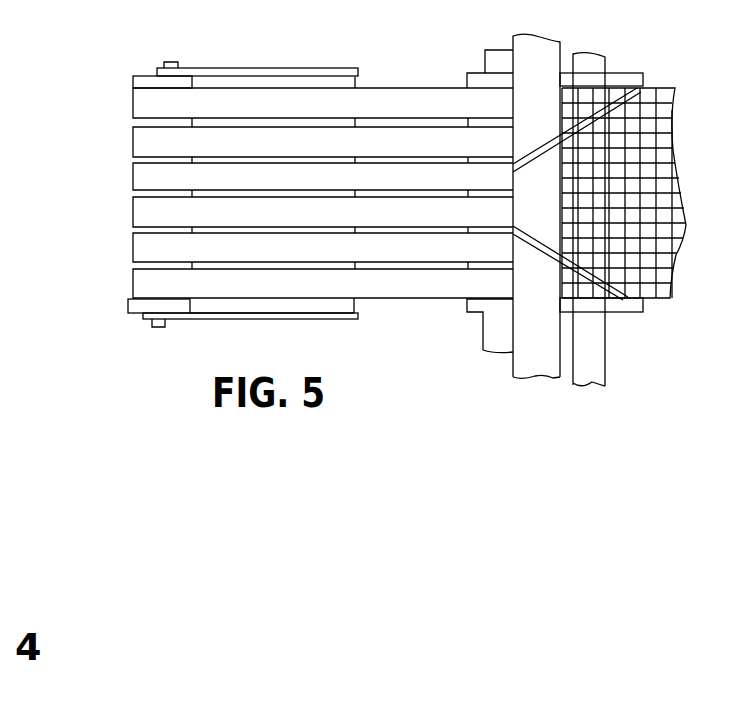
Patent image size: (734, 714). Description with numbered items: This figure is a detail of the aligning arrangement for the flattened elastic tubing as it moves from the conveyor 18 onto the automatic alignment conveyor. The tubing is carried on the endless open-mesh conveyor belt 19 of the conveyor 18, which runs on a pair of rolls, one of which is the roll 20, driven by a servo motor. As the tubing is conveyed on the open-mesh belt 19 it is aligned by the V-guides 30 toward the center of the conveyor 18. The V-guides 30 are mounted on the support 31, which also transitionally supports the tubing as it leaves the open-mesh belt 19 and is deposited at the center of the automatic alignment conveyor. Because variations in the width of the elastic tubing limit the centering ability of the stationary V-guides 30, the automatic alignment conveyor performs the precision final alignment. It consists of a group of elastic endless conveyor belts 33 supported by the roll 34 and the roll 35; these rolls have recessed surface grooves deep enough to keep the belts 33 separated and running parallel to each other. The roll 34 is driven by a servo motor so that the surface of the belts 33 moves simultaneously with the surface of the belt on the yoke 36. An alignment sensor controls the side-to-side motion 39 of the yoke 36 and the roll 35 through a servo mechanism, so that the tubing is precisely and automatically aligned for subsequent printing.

The conveyor 18 is at (676, 152).
The endless open-mesh conveyor belt 19 is at (650, 188).
The roll 20 is at (593, 53).
The V-guides 30 is at (612, 95).
The support 31 is at (552, 36).
The elastic endless conveyor belts 33 is at (431, 87).
The roll 34 is at (484, 62).
The roll 35 is at (133, 85).
The yoke 36 is at (311, 67).
The side-to-side motion 39 is at (133, 178).